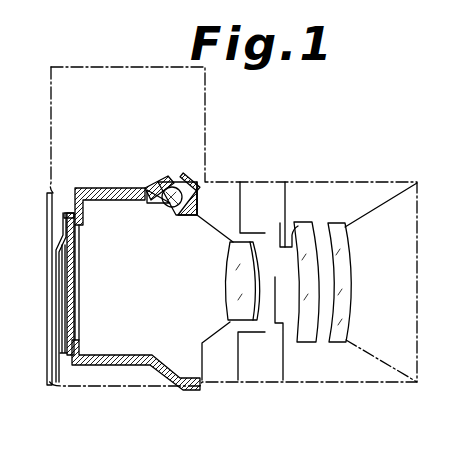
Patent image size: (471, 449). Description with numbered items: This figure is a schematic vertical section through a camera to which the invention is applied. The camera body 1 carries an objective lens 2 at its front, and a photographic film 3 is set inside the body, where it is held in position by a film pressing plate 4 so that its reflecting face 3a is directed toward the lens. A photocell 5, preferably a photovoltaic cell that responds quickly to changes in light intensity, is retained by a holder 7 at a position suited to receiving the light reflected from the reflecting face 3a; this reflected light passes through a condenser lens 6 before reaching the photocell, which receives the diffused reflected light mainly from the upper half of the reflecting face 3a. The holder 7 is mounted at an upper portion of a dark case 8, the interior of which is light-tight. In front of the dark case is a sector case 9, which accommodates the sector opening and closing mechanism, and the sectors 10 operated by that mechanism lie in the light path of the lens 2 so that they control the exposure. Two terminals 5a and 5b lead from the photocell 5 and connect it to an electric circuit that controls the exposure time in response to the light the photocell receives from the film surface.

The camera body 1 is at (51, 110).
The objective lens 2 is at (324, 346).
The photographic film 3 is at (70, 296).
The reflecting face 3a is at (79, 268).
The film pressing plate 4 is at (63, 262).
The photocell 5 is at (177, 180).
The terminal 5a is at (191, 176).
The terminal 5b is at (201, 189).
The condenser lens 6 is at (174, 212).
The holder 7 is at (152, 187).
The dark case 8 is at (118, 200).
The sector case 9 is at (262, 191).
The sectors 10 is at (298, 226).